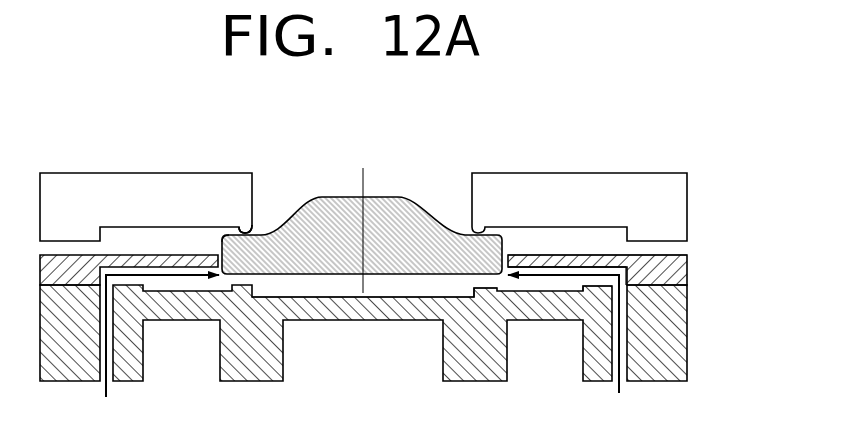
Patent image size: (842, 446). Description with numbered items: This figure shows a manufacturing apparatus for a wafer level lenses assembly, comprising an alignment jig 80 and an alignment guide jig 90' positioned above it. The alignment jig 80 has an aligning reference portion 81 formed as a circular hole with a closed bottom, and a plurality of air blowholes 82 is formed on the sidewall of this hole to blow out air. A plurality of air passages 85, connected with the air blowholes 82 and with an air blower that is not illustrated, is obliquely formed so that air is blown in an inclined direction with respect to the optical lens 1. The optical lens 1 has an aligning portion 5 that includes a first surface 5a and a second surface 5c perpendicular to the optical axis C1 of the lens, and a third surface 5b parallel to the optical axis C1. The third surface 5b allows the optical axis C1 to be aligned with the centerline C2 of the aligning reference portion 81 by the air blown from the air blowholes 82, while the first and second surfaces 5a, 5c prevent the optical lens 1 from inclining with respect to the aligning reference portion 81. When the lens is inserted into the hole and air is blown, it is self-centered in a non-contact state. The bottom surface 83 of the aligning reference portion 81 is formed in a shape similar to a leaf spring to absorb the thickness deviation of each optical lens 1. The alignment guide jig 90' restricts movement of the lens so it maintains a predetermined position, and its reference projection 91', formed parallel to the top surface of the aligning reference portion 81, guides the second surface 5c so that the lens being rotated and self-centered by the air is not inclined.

The alignment guide jig 90' is at (406, 207).
The reference projection 91' is at (270, 176).
The optical lens 1 is at (423, 193).
The aligning portion 5 is at (172, 125).
The first surface 5a is at (243, 230).
The third surface 5b is at (222, 246).
The second surface 5c is at (236, 247).
The optical axis C1 is at (365, 218).
The centerline C2 is at (365, 218).
The alignment jig 80 is at (704, 325).
The aligning reference portion 81 is at (507, 253).
The air blowholes 82 is at (515, 268).
The bottom surface 83 is at (480, 283).
The air passages 85 is at (593, 285).